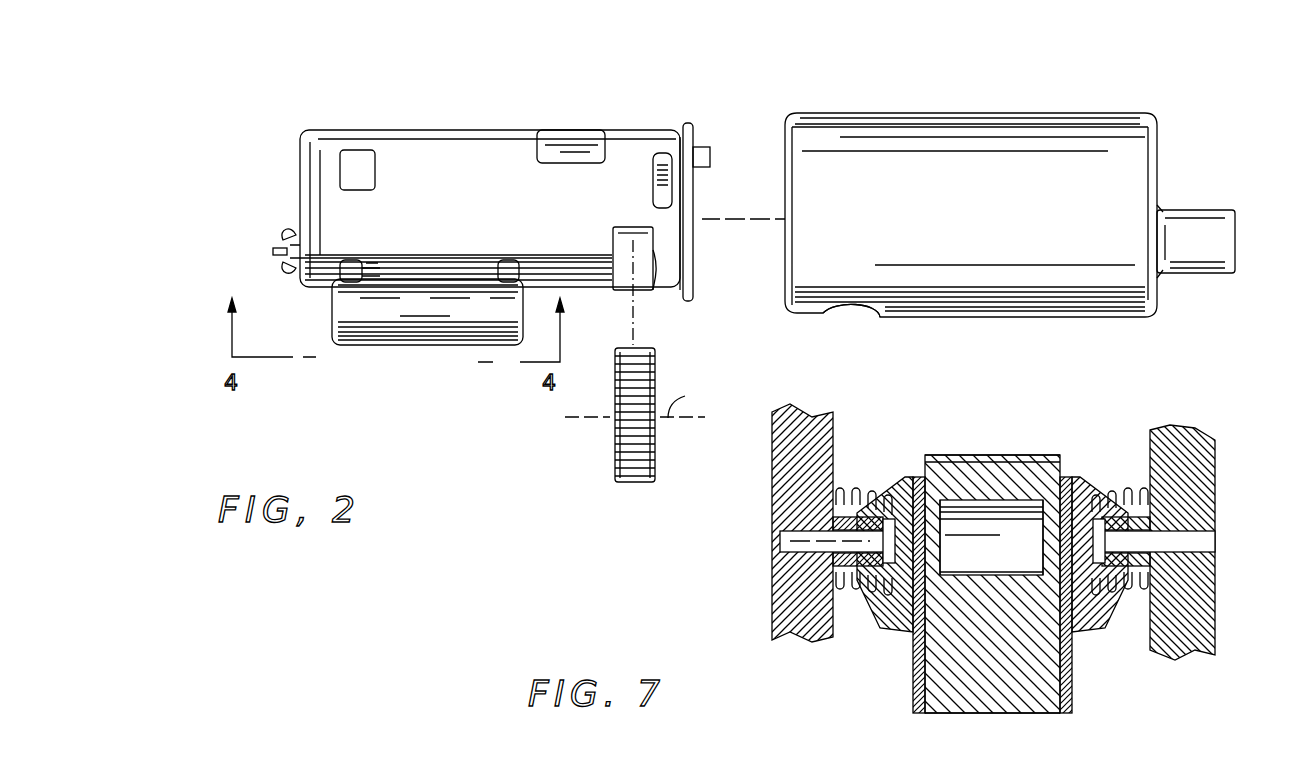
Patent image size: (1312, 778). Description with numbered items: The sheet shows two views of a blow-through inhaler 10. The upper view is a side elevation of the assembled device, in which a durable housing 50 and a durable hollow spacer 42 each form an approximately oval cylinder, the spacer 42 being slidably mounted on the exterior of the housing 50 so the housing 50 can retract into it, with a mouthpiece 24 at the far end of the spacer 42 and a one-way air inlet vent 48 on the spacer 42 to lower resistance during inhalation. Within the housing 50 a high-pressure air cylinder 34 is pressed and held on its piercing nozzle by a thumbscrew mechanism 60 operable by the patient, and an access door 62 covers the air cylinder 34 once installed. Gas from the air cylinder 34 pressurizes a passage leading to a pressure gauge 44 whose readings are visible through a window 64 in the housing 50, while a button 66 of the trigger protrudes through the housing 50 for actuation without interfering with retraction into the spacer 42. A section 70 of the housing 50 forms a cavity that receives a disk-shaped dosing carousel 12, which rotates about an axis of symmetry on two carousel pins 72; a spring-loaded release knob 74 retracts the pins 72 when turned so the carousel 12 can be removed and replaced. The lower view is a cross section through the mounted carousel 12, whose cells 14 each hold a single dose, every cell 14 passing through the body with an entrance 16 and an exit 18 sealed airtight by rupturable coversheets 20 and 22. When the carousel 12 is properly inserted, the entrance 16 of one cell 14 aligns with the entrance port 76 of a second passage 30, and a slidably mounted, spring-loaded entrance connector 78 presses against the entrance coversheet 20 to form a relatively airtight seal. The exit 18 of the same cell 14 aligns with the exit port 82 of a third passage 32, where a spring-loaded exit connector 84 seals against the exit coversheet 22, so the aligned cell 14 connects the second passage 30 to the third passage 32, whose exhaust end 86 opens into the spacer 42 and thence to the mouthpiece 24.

In FIG. 2, the inhaler 10 is at (210, 247).
In FIG. 2, the dosing carousel 12 is at (622, 444).
In FIG. 7, the dosing carousel 12 is at (988, 470).
In FIG. 7, the cells 14 is at (1040, 560).
In FIG. 7, the entrance 16 is at (925, 560).
In FIG. 7, the exit 18 is at (1003, 570).
In FIG. 7, the entrance coversheet 20 is at (920, 477).
In FIG. 7, the exit coversheet 22 is at (1068, 477).
In FIG. 2, the mouthpiece 24 is at (1213, 213).
In FIG. 7, the second passage 30 is at (782, 541).
In FIG. 7, the third passage 32 is at (1207, 545).
In FIG. 2, the air cylinder 34 is at (458, 272).
In FIG. 2, the spacer 42 is at (1073, 135).
In FIG. 2, the pressure gauge 44 is at (345, 150).
In FIG. 2, the one-way air inlet vent 48 is at (840, 312).
In FIG. 2, the housing 50 is at (315, 152).
In FIG. 2, the thumbscrew mechanism 60 is at (290, 238).
In FIG. 2, the access door 62 is at (390, 312).
In FIG. 2, the window 64 is at (365, 155).
In FIG. 2, the button 66 is at (570, 142).
In FIG. 2, the section 70 is at (650, 258).
In FIG. 2, the carousel pins 72 is at (650, 228).
In FIG. 2, the release knob 74 is at (656, 158).
In FIG. 7, the entrance port 76 is at (874, 518).
In FIG. 7, the entrance connector 78 is at (872, 618).
In FIG. 7, the exit port 82 is at (1118, 527).
In FIG. 7, the exit connector 84 is at (1098, 630).
In FIG. 2, the exhaust end 86 is at (712, 153).